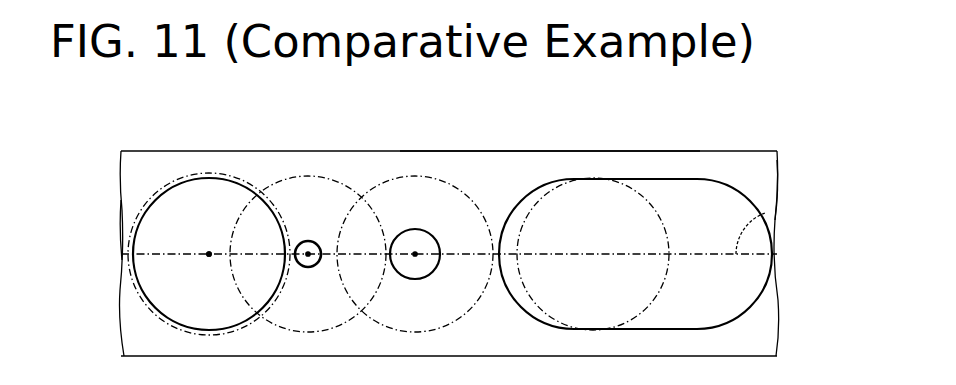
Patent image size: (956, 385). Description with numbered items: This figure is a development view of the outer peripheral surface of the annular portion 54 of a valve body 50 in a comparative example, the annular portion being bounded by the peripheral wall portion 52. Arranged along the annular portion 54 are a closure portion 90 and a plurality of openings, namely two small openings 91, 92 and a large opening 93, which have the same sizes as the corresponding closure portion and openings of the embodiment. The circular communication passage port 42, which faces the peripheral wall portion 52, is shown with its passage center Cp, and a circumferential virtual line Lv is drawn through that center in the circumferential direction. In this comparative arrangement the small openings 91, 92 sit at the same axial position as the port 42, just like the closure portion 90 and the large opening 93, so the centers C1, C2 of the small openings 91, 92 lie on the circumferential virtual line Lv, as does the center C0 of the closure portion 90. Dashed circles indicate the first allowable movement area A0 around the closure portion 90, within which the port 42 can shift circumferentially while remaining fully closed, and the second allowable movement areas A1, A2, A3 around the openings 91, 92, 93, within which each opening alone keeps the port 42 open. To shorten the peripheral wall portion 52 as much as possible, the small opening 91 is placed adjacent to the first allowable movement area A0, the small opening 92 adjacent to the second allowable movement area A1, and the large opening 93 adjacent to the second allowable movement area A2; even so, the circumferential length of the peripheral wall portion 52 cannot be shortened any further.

The valve body 50 is at (149, 151).
The peripheral wall portion 52 is at (553, 151).
The annular portion 54 is at (760, 172).
The communication passage port 42 is at (127, 217).
The closure portion 90 is at (142, 240).
The small opening 91 is at (317, 245).
The small opening 92 is at (437, 240).
The large opening 93 is at (682, 184).
The center of the closure portion C0 is at (209, 251).
The passage center Cp is at (209, 254).
The center of the small opening C1 is at (307, 250).
The center of the small opening C2 is at (414, 250).
The first allowable movement area A0 is at (150, 188).
The second allowable movement area A1 is at (262, 195).
The second allowable movement area A2 is at (473, 203).
The second allowable movement area A3 is at (646, 195).
The circumferential virtual line Lv is at (765, 214).